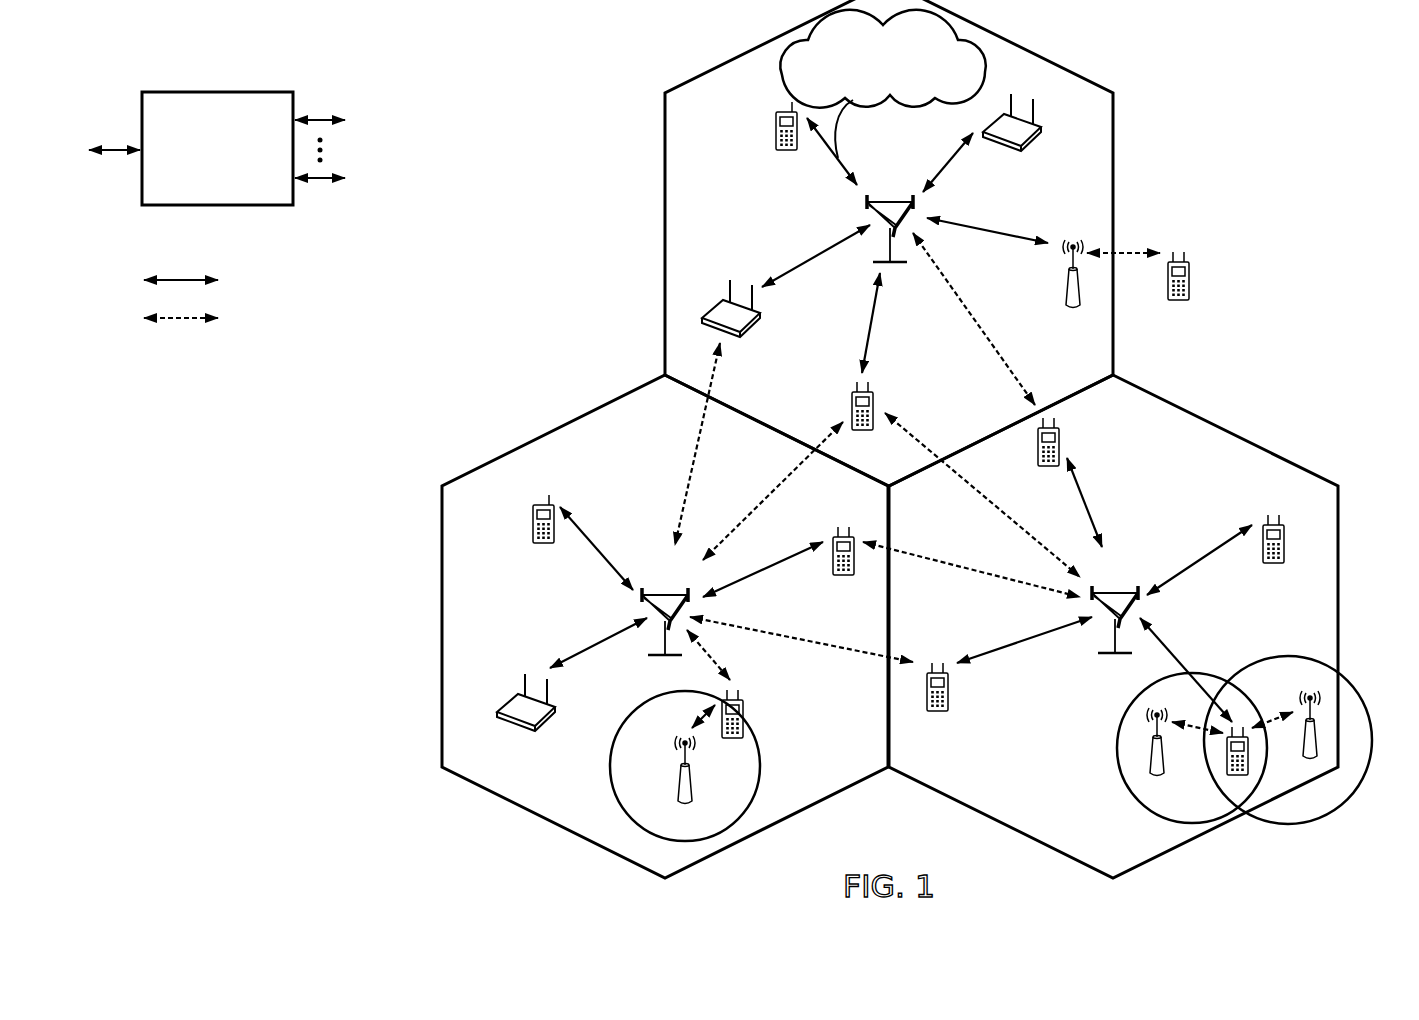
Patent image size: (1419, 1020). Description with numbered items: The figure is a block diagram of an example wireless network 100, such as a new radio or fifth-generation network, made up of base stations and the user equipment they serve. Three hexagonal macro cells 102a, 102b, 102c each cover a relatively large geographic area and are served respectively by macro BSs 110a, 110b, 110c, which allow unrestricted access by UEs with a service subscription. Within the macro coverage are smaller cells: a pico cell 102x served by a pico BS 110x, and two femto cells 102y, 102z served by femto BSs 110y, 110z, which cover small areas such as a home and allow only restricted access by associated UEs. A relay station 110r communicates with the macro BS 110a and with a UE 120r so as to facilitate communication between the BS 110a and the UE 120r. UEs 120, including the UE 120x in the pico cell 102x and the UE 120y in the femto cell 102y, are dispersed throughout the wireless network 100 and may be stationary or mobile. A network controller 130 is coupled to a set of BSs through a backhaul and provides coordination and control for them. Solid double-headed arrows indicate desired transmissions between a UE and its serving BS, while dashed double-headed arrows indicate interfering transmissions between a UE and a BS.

The wireless network 100 is at (1263, 53).
The macro cell 102a is at (1007, 40).
The macro cell 102b is at (553, 431).
The macro cell 102c is at (1228, 432).
The pico cell 102x is at (633, 712).
The femto cell 102y is at (1122, 712).
The femto cell 102z is at (1287, 656).
The macro BS 110a is at (885, 200).
The macro BS 110b is at (659, 593).
The macro BS 110c is at (1112, 593).
The relay station 110r is at (1064, 292).
The pico BS 110x is at (694, 795).
The femto BS 110y is at (1165, 766).
The femto BS 110z is at (1318, 750).
The UE 120 is at (777, 119).
The UE 120r is at (1190, 288).
The UE 120x is at (745, 713).
The UE 120y is at (1226, 768).
The network controller 130 is at (210, 92).